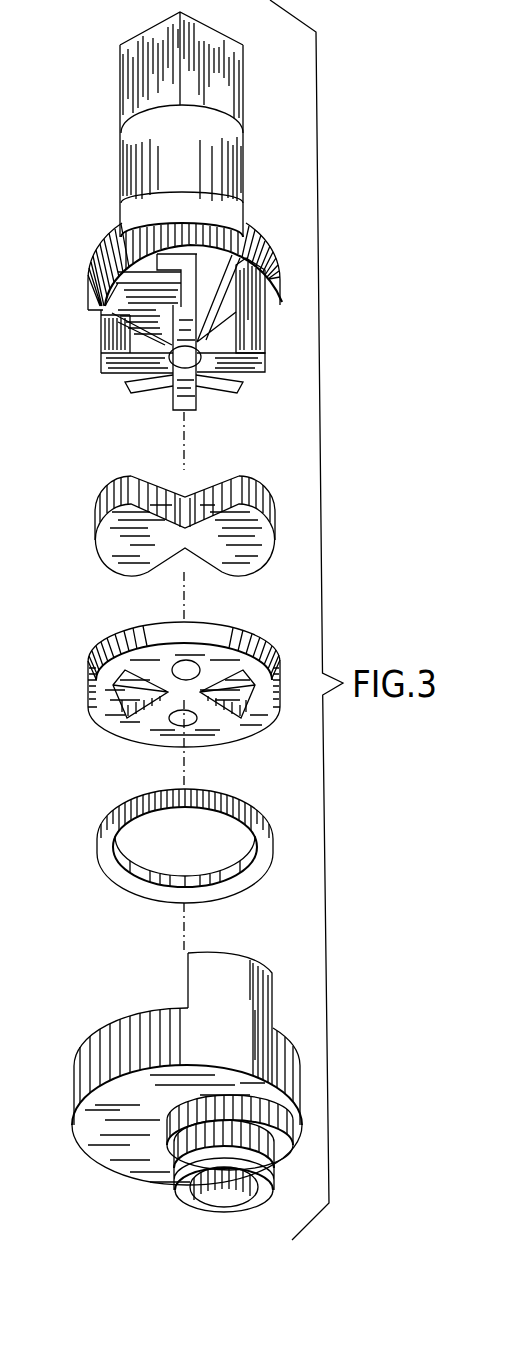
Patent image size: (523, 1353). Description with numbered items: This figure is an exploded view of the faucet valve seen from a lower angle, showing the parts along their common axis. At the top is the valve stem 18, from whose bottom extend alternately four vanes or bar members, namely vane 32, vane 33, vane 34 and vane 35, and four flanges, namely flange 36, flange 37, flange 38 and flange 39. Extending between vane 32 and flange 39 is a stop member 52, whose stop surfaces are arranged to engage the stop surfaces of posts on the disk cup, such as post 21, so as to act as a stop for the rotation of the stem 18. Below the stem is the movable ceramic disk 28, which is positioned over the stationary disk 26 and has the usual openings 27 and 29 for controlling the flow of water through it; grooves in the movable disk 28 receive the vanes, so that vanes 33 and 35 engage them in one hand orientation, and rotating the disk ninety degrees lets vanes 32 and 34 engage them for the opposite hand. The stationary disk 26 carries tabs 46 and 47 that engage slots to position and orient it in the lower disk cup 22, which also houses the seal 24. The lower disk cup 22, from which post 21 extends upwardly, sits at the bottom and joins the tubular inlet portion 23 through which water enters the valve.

The valve stem 18 is at (228, 185).
The stop member 52 is at (118, 252).
The vane 32 is at (102, 305).
The flange 39 is at (123, 327).
The vane 35 is at (110, 367).
The vane 33 is at (257, 364).
The flange 36 is at (232, 333).
The vane 34 is at (174, 410).
The flange 38 is at (134, 395).
The flange 37 is at (233, 391).
The movable ceramic disk 28 is at (260, 556).
The stationary disk 26 is at (212, 638).
The tab 46 is at (88, 680).
The tab 47 is at (270, 673).
The opening 27 is at (118, 716).
The opening 29 is at (240, 716).
The seal 24 is at (268, 857).
The post 21 is at (255, 962).
The lower disk cup 22 is at (277, 1038).
The tubular inlet portion 23 is at (268, 1178).